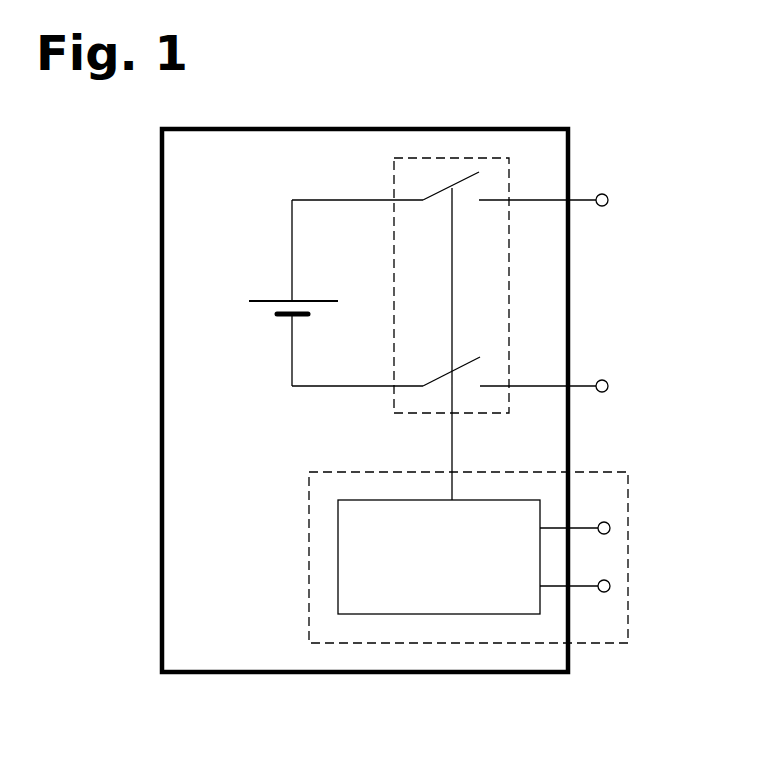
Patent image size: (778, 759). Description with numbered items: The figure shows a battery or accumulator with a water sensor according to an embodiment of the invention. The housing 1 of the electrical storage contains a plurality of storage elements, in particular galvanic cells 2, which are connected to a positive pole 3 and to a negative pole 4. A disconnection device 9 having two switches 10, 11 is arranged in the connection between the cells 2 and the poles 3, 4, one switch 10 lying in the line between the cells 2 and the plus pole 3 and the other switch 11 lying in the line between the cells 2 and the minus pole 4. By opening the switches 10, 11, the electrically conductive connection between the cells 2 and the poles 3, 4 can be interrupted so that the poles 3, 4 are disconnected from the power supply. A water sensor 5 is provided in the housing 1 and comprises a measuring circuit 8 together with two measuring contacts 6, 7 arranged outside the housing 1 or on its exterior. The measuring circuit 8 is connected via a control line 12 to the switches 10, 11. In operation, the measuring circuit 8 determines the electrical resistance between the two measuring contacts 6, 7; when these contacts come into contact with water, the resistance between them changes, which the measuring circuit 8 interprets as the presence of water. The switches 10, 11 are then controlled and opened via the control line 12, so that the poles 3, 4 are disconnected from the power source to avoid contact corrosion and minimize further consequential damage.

The housing 1 is at (162, 415).
The cells 2 is at (277, 315).
The positive pole 3 is at (607, 196).
The negative pole 4 is at (607, 381).
The water sensor 5 is at (455, 643).
The measuring contact 6 is at (610, 525).
The measuring contact 7 is at (611, 589).
The measuring circuit 8 is at (425, 574).
The disconnection device 9 is at (393, 158).
The switch 10 is at (462, 178).
The switch 11 is at (468, 363).
The control line 12 is at (452, 298).